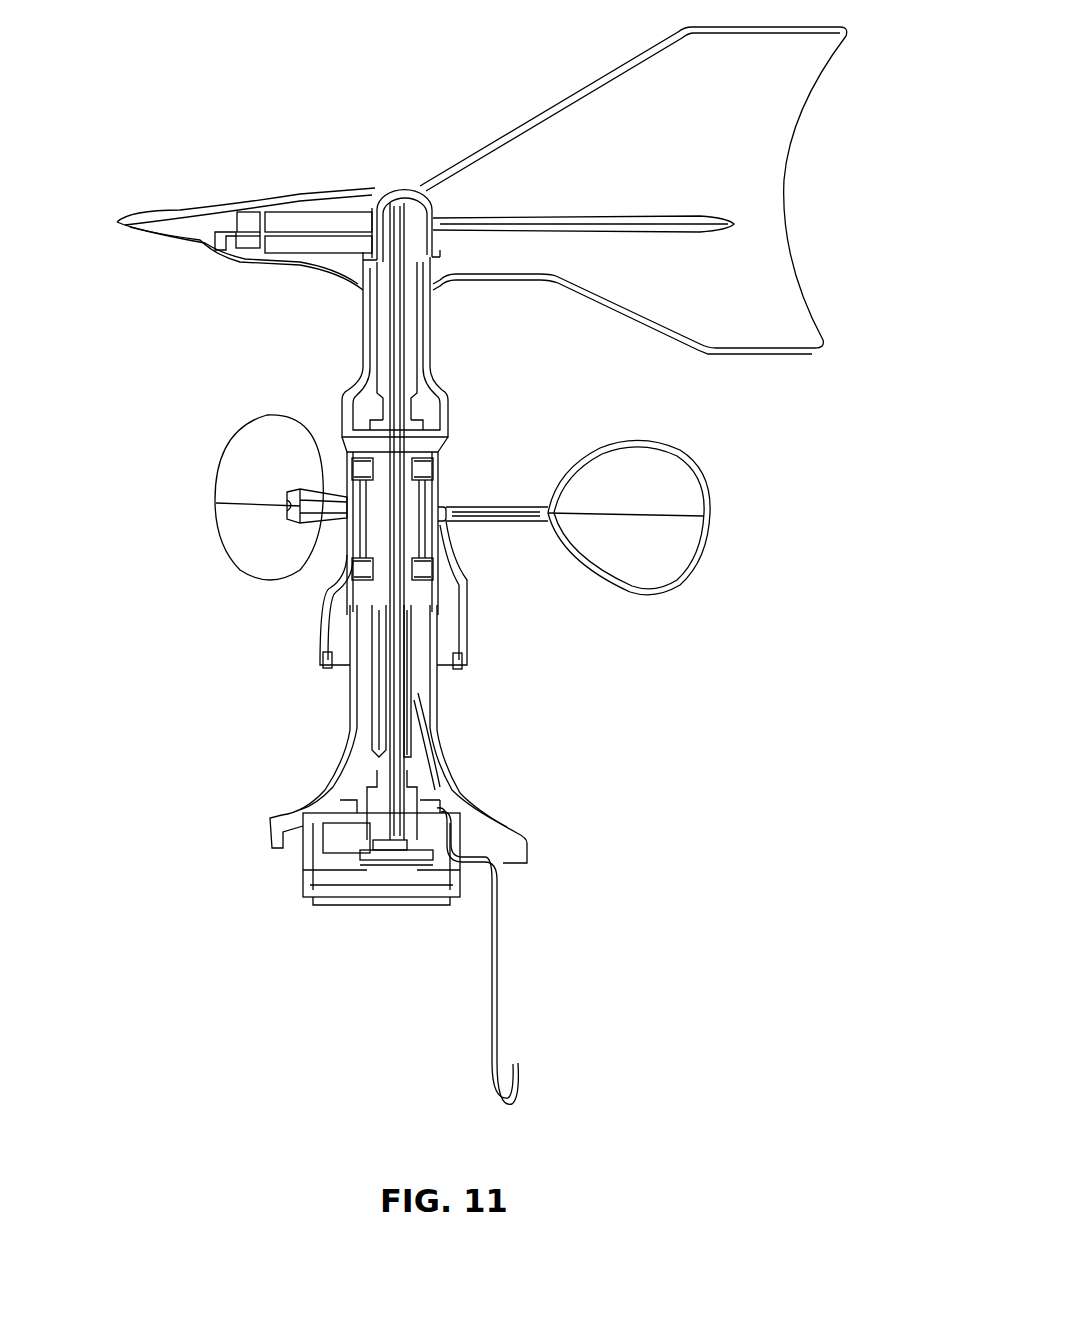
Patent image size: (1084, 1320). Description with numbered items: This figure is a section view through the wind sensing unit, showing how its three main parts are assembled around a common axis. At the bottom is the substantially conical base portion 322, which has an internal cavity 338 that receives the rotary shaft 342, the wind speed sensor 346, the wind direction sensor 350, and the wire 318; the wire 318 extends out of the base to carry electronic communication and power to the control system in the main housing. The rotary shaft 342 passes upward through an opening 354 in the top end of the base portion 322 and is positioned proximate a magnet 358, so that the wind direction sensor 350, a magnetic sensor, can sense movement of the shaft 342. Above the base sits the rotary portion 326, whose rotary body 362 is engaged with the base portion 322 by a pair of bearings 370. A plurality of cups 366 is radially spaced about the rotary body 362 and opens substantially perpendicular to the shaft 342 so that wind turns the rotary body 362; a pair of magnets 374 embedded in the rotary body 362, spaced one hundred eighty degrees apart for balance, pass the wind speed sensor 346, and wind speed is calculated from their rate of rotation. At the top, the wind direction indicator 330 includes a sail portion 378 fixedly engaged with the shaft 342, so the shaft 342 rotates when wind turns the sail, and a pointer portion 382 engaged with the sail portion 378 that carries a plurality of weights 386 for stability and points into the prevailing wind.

The wire 318 is at (498, 1035).
The base portion 322 is at (506, 738).
The rotary portion 326 is at (514, 614).
The wind direction indicator 330 is at (406, 150).
The internal cavity 338 is at (405, 724).
The rotary shaft 342 is at (386, 590).
The wind speed sensor 346 is at (419, 694).
The wind direction sensor 350 is at (378, 846).
The opening 354 is at (407, 258).
The magnet 358 is at (395, 862).
The rotary body 362 is at (316, 592).
The cups 366 is at (680, 484).
The bearings 370 is at (440, 466).
The magnets 374 is at (325, 670).
The sail portion 378 is at (768, 120).
The pointer portion 382 is at (236, 232).
The weights 386 is at (320, 225).